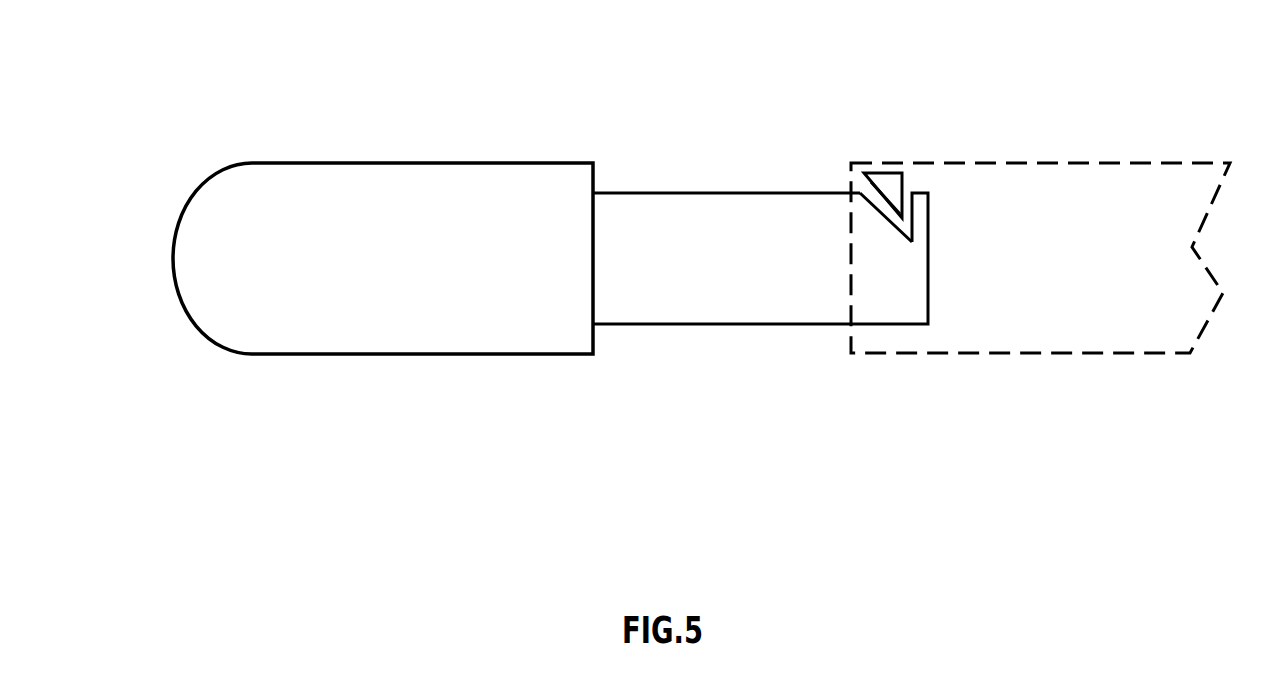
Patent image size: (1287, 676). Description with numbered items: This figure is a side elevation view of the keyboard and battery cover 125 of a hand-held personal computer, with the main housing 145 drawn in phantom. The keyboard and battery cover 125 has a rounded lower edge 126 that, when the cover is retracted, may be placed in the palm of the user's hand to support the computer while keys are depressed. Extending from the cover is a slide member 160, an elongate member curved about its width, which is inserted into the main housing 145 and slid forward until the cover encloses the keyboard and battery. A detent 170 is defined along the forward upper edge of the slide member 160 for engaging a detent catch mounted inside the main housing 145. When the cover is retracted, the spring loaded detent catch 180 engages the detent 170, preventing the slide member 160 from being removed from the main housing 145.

The keyboard and battery cover 125 is at (307, 212).
The lower edge 126 is at (220, 275).
The main housing 145 is at (1143, 182).
The slide members 160 is at (683, 293).
The detent 170 is at (877, 183).
The spring loaded detent catch 180 is at (887, 183).